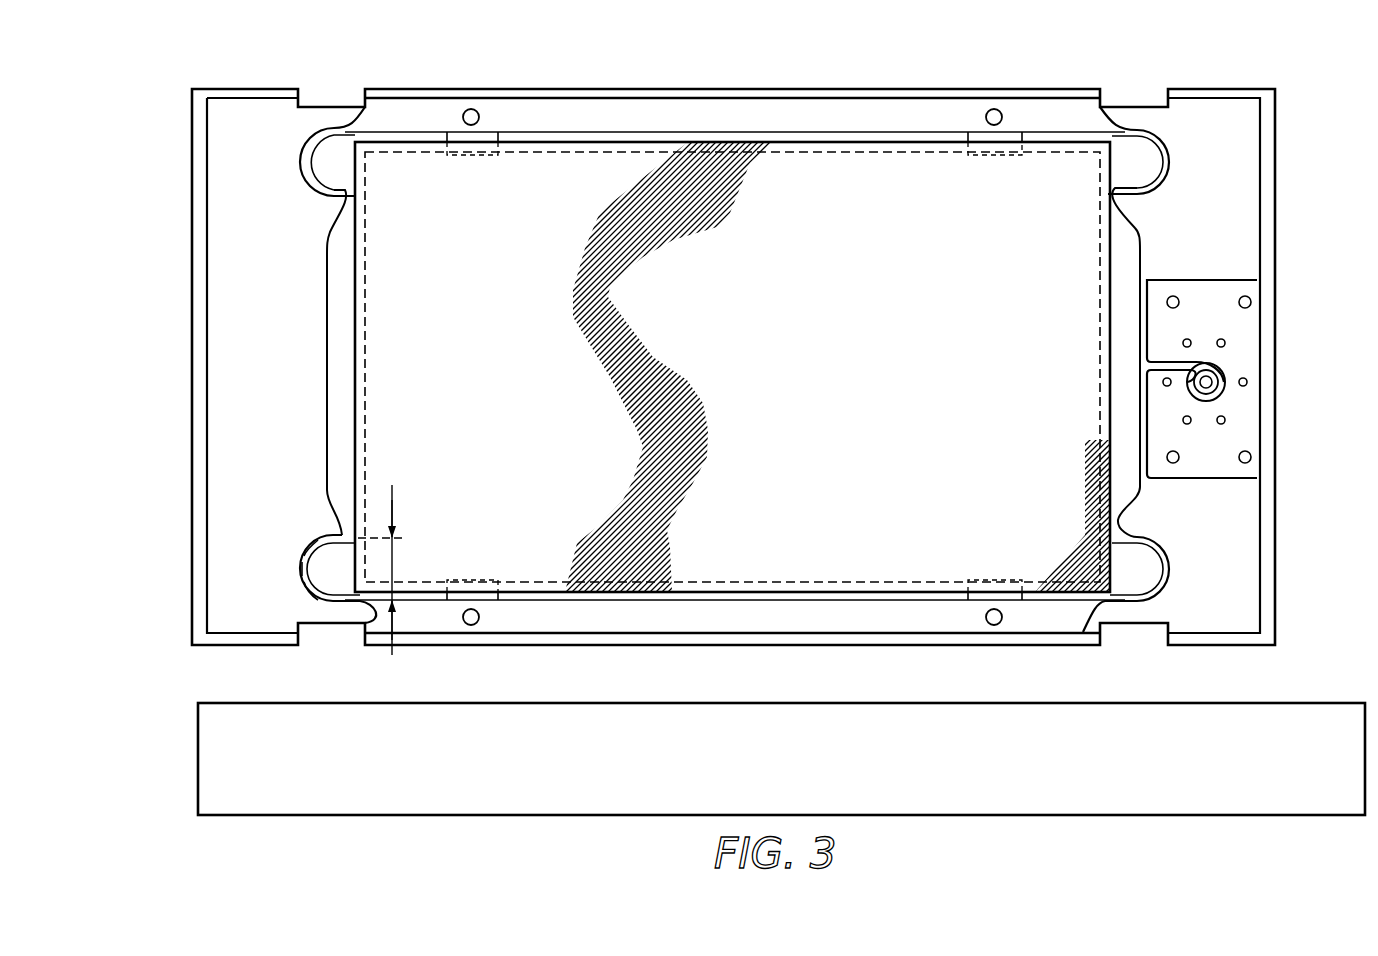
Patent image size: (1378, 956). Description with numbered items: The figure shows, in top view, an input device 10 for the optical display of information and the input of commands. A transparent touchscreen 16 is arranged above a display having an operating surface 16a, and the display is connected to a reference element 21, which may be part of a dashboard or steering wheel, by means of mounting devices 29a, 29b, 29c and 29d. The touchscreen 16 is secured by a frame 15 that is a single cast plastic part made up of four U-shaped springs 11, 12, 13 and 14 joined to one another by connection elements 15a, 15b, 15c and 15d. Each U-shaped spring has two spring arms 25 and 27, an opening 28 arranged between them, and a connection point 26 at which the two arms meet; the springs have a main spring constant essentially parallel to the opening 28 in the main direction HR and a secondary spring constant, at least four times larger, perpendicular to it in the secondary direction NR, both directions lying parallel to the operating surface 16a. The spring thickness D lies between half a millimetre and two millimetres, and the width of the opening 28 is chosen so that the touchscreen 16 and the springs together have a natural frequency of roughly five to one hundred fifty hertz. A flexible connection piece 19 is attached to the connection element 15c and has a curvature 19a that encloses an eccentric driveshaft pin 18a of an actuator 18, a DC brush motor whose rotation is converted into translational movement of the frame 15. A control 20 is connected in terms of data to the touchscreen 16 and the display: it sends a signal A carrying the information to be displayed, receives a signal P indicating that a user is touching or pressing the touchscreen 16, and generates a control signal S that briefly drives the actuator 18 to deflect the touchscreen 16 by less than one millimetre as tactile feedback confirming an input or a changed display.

The input device 10 is at (112, 183).
The U-shaped spring 11 is at (1165, 163).
The U-shaped spring 12 is at (345, 162).
The U-shaped spring 13 is at (338, 523).
The U-shaped spring 14 is at (1168, 572).
The frame 15 is at (729, 363).
The connection element 15a is at (330, 330).
The connection element 15b is at (735, 110).
The connection element 15c is at (1130, 246).
The connection element 15d is at (697, 625).
The touchscreen 16 is at (744, 317).
The operating surface 16a is at (768, 342).
The actuator 18 is at (1202, 472).
The eccentric driveshaft pin 18a is at (1218, 392).
The connection piece 19 is at (1172, 352).
The curvature 19a is at (1214, 378).
The control 20 is at (800, 776).
The reference element 21 is at (283, 256).
The spring arm 25 is at (312, 548).
The connection point 26 is at (310, 568).
The spring arm 27 is at (312, 586).
The opening 28 is at (400, 499).
The mounting device 29a is at (462, 155).
The mounting device 29b is at (985, 155).
The mounting device 29c is at (985, 580).
The mounting device 29d is at (485, 580).